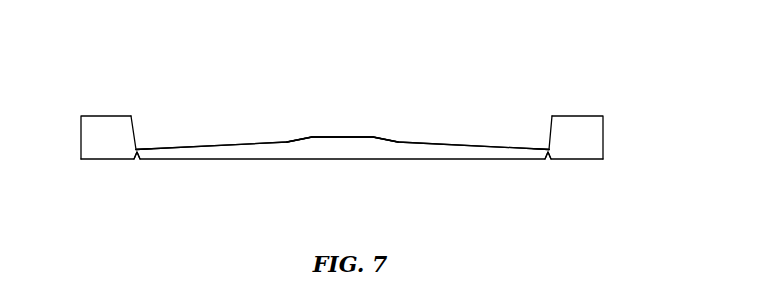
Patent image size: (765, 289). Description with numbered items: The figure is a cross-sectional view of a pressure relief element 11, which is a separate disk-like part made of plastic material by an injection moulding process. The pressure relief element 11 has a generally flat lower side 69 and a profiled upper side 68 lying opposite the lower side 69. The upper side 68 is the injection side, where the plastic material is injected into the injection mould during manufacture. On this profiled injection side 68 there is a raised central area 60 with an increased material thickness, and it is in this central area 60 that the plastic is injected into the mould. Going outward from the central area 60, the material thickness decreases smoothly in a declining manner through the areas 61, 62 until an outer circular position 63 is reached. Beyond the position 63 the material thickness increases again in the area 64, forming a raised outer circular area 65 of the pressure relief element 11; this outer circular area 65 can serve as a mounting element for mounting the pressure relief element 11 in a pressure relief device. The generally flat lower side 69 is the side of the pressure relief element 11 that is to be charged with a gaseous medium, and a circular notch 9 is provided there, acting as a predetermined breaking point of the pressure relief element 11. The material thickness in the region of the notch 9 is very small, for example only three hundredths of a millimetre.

The pressure relief element 11 is at (483, 67).
The notch 9 is at (137, 159).
The raised central area 60 is at (343, 137).
The area of decreasing material thickness 61 is at (285, 142).
The area of decreasing material thickness 62 is at (193, 148).
The outer circular position 63 is at (140, 149).
The area of increasing material thickness 64 is at (134, 131).
The raised outer circular area 65 is at (105, 116).
The profiled upper side 68 is at (369, 127).
The generally flat lower side 69 is at (351, 172).